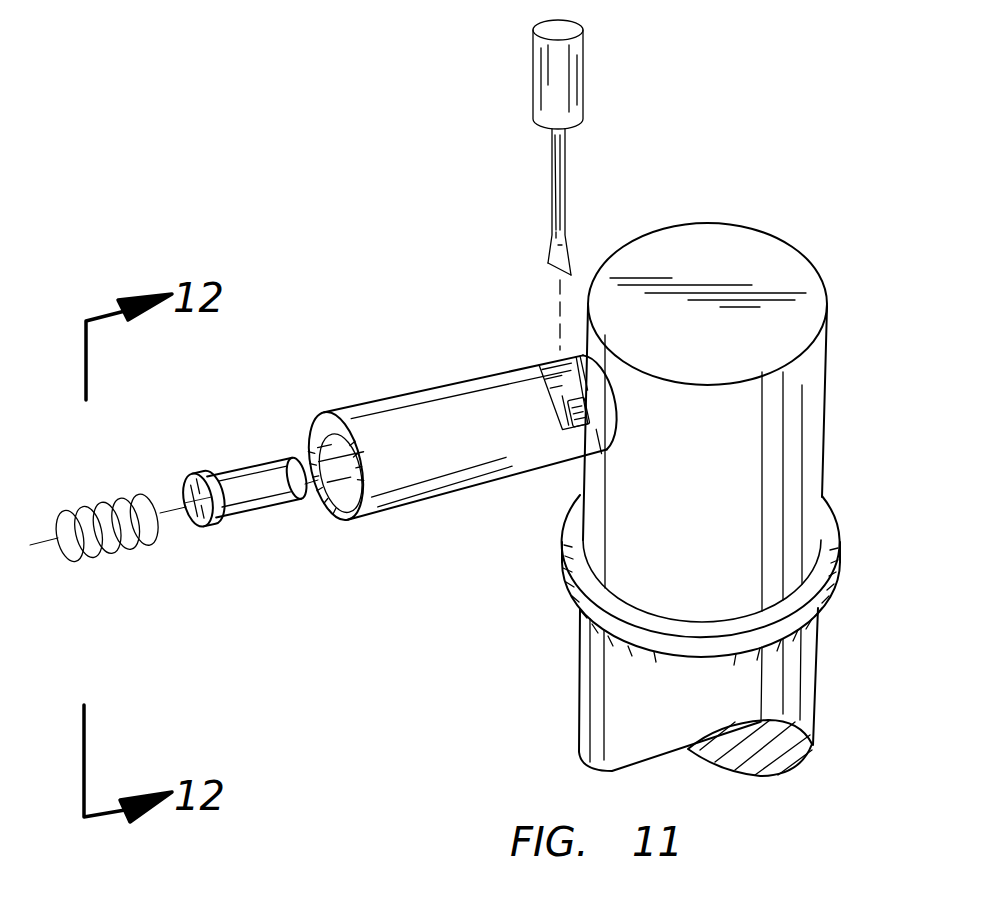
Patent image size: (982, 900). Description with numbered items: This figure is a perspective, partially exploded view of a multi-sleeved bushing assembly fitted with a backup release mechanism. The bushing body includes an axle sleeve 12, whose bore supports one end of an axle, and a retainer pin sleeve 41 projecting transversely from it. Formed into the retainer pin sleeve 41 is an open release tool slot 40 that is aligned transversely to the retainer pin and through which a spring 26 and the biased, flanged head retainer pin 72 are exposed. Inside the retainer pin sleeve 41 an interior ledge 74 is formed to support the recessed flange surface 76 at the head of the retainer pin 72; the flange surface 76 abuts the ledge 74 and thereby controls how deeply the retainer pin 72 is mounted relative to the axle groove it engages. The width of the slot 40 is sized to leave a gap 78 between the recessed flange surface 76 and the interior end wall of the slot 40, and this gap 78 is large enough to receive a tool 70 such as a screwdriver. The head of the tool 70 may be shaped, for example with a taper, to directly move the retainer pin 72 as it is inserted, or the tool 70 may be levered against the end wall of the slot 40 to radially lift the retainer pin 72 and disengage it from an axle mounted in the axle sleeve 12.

The axle sleeve 12 is at (816, 667).
The spring 26 is at (81, 508).
The release tool slot 40 is at (577, 423).
The retainer pin sleeve 41 is at (433, 385).
The tool 70 is at (585, 74).
The flanged head retainer pin 72 is at (186, 484).
The interior ledge 74 is at (562, 411).
The recessed flange surface 76 is at (203, 474).
The gap 78 is at (560, 385).